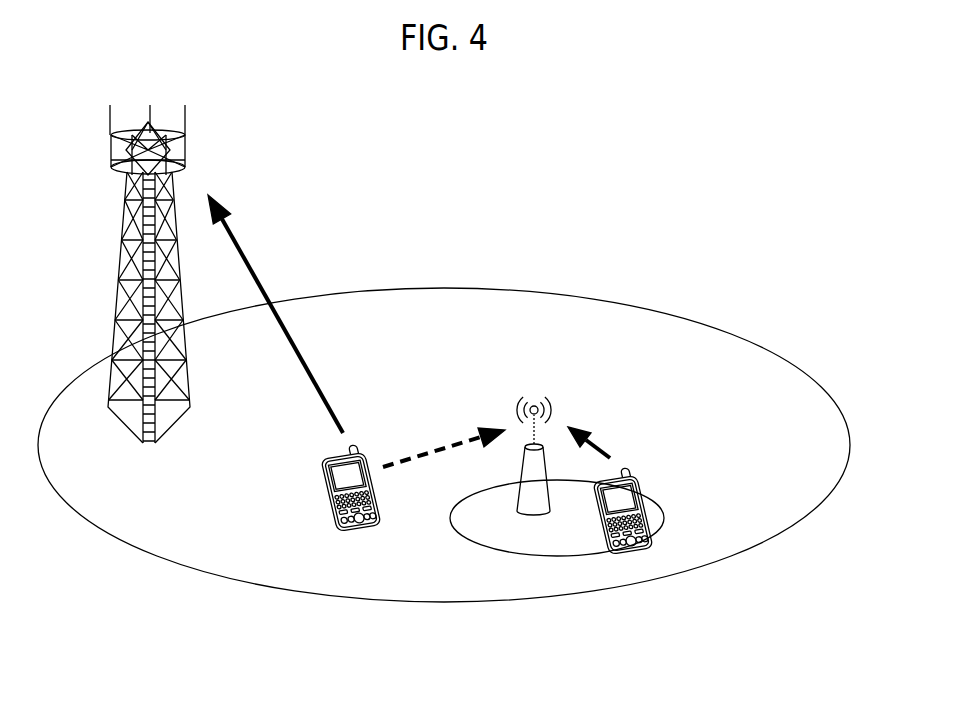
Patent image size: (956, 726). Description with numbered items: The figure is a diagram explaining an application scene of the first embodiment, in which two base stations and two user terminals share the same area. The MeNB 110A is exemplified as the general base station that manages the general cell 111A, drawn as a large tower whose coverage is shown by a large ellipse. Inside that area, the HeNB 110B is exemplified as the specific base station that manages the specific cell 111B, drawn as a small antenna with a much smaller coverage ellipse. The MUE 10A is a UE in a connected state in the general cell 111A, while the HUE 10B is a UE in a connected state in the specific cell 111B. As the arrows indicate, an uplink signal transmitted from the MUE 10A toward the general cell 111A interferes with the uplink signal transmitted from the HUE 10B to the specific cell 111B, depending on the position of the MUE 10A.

The MeNB 110A is at (186, 150).
The general cell 111A is at (673, 308).
The MUE 10A is at (342, 537).
The HeNB 110B is at (516, 513).
The specific cell 111B is at (530, 557).
The HUE 10B is at (632, 557).